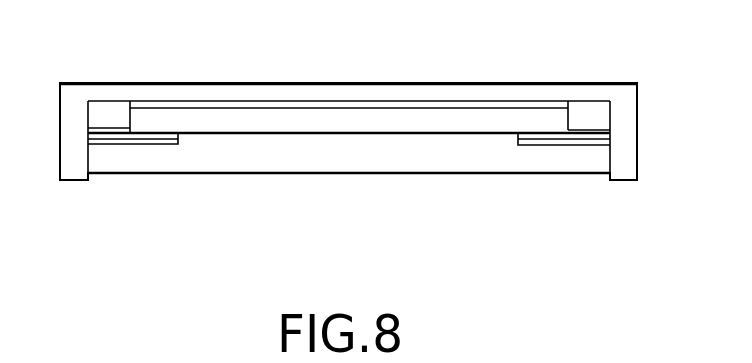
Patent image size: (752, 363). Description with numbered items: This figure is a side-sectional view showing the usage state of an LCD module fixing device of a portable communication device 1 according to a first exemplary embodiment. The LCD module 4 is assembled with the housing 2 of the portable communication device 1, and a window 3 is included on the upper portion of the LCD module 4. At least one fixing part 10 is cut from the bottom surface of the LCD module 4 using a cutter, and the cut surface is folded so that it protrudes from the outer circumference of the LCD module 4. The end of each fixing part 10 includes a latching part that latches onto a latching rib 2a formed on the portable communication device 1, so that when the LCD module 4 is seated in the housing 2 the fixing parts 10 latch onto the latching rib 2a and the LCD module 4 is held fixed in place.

The portable communication device 1 is at (389, 162).
The housing 2 is at (630, 106).
The latching rib 2a is at (602, 120).
The window 3 is at (389, 92).
The LCD module 4 is at (463, 120).
The fixing part 10 is at (152, 141).